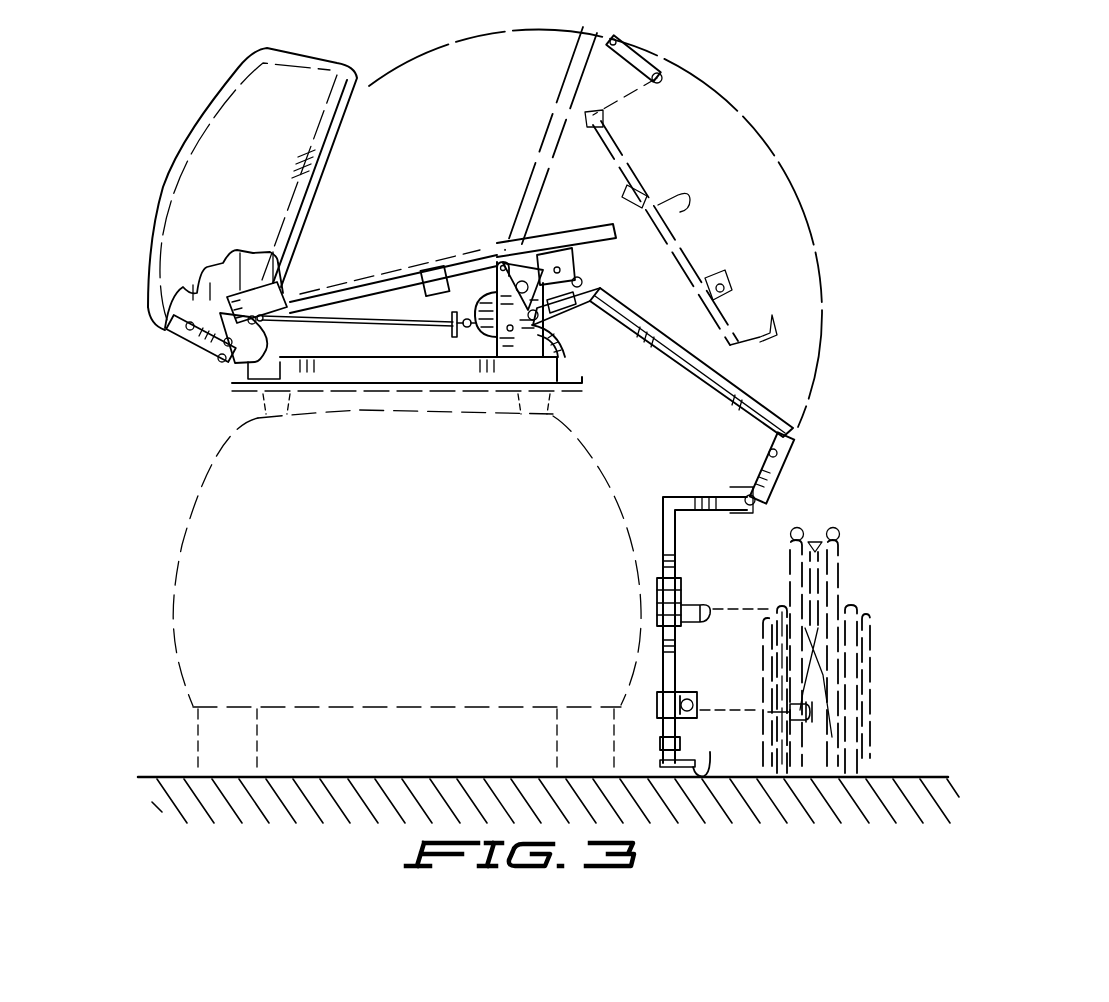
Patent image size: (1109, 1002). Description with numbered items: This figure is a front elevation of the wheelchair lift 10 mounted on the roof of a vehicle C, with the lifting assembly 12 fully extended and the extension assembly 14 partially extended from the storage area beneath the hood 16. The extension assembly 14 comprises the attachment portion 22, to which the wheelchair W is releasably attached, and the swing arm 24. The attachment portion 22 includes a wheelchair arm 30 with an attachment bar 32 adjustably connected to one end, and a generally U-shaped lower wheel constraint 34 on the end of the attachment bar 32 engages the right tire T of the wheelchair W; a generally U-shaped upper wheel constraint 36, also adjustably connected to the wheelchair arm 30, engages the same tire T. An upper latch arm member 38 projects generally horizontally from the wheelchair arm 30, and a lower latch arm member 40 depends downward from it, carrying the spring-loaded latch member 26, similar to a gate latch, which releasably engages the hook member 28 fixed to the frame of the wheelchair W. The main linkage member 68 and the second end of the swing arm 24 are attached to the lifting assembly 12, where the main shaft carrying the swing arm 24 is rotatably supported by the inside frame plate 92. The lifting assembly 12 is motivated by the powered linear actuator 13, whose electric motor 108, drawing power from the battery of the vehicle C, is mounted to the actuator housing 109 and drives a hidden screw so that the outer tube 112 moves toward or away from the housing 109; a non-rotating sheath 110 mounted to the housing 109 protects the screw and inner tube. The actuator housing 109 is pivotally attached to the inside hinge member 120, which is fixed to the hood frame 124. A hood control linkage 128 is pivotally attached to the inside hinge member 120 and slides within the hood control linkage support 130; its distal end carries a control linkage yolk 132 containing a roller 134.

The wheelchair lift 10 is at (805, 140).
The lifting assembly 12 is at (496, 245).
The powered linear actuator 13 is at (598, 250).
The extension assembly 14 is at (653, 43).
The hood 16 is at (230, 105).
The attachment portion 22 is at (625, 152).
The swing arm 24 is at (748, 410).
The spring-loaded latch member 26 is at (657, 691).
The hook member 28 is at (773, 707).
The wheelchair arm 30 is at (657, 559).
The attachment bar 32 is at (657, 757).
The lower wheel constraint 34 is at (707, 753).
The upper wheel constraint 36 is at (697, 602).
The upper latch arm member 38 is at (657, 587).
The lower latch arm member 40 is at (678, 648).
The main linkage member 68 is at (614, 333).
The inside frame plate 92 is at (500, 290).
The electric motor 108 is at (276, 320).
The actuator housing 109 is at (220, 297).
The non-rotating sheath 110 is at (373, 293).
The outer tube 112 is at (440, 268).
The inside hinge member 120 is at (185, 346).
The hood frame 124 is at (262, 265).
The hood control linkage 128 is at (357, 384).
The hood control linkage support 130 is at (447, 333).
The control linkage yolk 132 is at (466, 330).
The roller 134 is at (472, 330).
The vehicle C is at (204, 494).
The right tire T is at (783, 603).
The wheelchair W is at (840, 582).